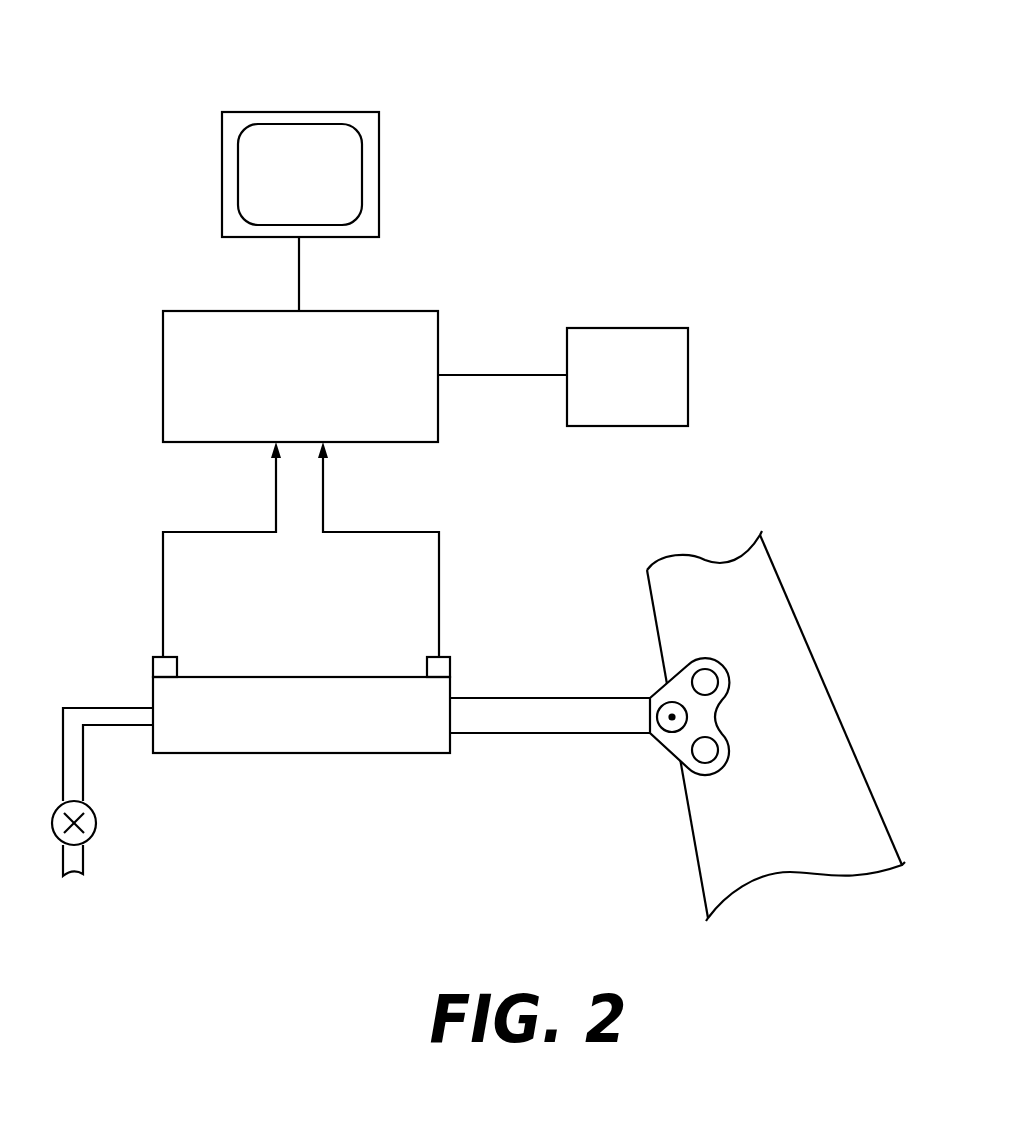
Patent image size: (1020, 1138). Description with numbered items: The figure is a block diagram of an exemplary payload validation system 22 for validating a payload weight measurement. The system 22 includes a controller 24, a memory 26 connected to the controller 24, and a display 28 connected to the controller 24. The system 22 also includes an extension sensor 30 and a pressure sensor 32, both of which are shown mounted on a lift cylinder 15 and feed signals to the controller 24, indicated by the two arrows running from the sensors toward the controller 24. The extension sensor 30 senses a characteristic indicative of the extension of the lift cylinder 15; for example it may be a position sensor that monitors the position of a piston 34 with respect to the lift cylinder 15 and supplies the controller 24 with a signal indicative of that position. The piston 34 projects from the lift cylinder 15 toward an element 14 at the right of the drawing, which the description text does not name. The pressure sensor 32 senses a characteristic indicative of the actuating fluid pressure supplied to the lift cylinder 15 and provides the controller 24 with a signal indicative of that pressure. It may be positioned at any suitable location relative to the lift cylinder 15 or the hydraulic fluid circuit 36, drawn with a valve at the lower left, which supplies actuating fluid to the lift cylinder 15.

The panel / workpiece 14 is at (815, 620).
The lift cylinder 15 is at (288, 737).
The payload validation system 22 is at (557, 192).
The controller 24 is at (409, 330).
The memory 26 is at (677, 378).
The display 28 is at (318, 111).
The extension sensor 30 is at (443, 665).
The pressure sensor 32 is at (160, 662).
The piston 34 is at (540, 722).
The hydraulic fluid circuit 36 is at (83, 778).